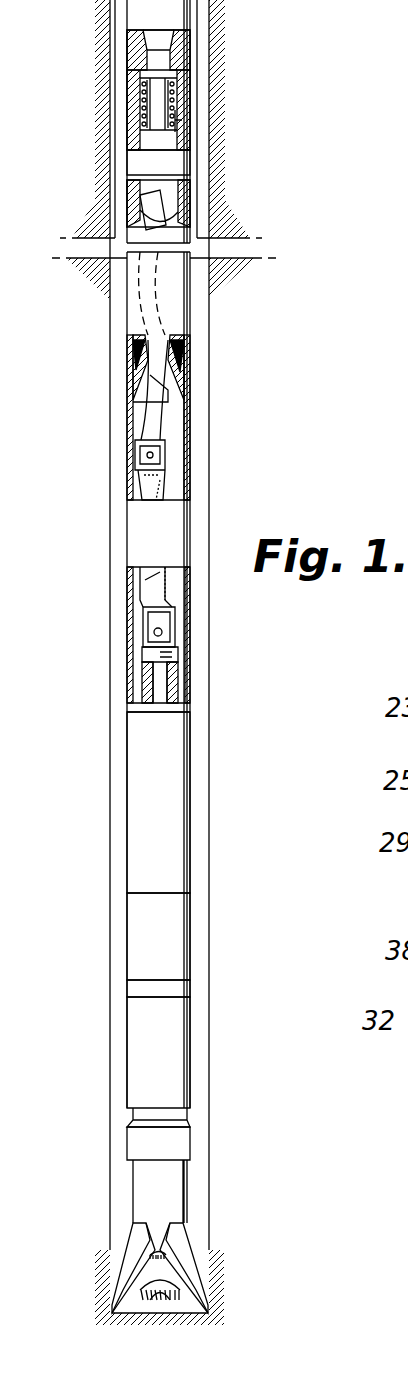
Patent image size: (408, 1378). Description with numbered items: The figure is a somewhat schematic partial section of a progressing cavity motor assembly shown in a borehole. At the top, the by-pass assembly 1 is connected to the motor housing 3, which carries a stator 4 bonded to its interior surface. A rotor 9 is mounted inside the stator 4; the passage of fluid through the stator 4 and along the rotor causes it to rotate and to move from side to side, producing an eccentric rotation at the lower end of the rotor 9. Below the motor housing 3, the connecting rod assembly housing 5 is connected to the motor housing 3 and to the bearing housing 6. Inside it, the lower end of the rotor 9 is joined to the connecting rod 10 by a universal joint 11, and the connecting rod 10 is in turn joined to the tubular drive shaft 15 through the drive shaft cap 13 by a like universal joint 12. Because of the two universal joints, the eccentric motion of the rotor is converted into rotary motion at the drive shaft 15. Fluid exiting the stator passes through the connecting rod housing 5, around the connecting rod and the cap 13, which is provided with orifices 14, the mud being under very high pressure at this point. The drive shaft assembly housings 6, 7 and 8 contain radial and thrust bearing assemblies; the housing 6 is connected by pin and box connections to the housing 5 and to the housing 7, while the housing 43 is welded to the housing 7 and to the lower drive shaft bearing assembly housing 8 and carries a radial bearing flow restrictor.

The by-pass assembly 1 is at (188, 103).
The motor housing 3 is at (186, 318).
The stator 4 is at (182, 354).
The connecting rod assembly housing 5 is at (190, 483).
The rotor 9 is at (150, 375).
The universal joint 11 is at (153, 458).
The connecting rod 10 is at (158, 597).
The universal joint 12 is at (170, 633).
The drive shaft cap 13 is at (143, 656).
The orifices 14 is at (176, 672).
The tubular drive shaft 15 is at (140, 697).
The bearing housing 6 is at (184, 806).
The drive shaft assembly housing 7 is at (186, 943).
The housing 43 is at (188, 988).
The lower drive shaft bearing assembly housing 8 is at (182, 1048).